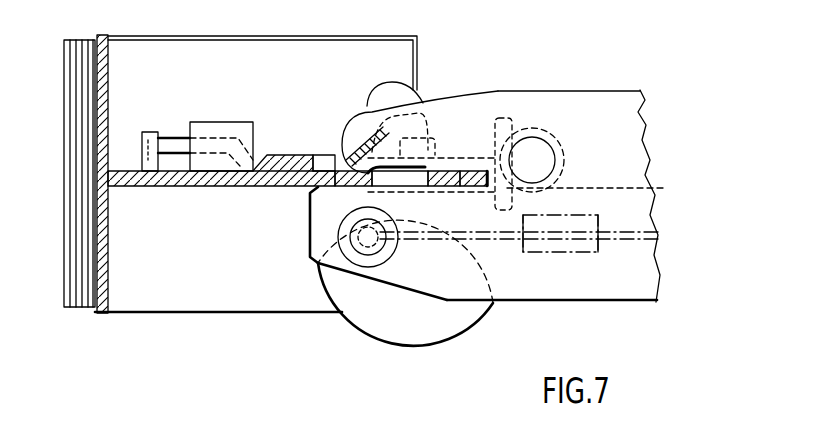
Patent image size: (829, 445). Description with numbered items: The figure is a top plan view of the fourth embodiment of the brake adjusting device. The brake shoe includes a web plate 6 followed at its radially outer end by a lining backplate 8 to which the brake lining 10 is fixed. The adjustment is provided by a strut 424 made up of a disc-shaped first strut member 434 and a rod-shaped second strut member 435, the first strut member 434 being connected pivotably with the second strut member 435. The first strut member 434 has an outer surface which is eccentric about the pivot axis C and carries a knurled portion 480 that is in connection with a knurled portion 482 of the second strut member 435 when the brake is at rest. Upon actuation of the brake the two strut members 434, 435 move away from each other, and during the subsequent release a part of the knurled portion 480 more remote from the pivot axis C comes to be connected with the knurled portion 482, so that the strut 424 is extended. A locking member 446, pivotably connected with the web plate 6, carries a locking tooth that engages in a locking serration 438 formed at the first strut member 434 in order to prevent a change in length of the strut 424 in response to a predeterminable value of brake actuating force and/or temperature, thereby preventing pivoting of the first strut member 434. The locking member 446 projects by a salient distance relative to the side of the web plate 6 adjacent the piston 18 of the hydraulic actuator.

The brake lining 10 is at (76, 293).
The lining backplate 8 is at (105, 287).
The web plate 6 is at (197, 175).
The locking member 446 is at (288, 167).
The locking serration 438 is at (388, 118).
The strut 424 is at (480, 76).
The piston 18 is at (508, 124).
The knurled portion 482 is at (490, 158).
The second strut member 435 is at (617, 112).
The pivot axis C is at (378, 243).
The first strut member 434 is at (418, 325).
The knurled portion 480 is at (496, 306).